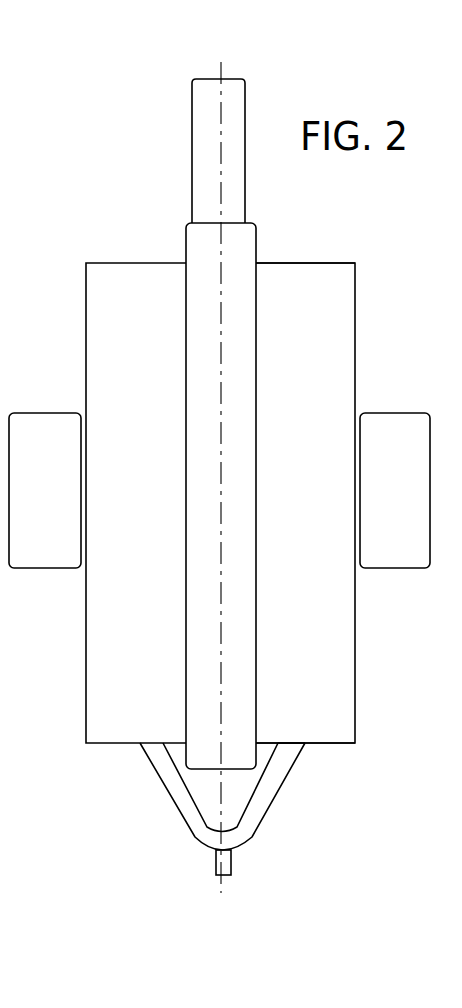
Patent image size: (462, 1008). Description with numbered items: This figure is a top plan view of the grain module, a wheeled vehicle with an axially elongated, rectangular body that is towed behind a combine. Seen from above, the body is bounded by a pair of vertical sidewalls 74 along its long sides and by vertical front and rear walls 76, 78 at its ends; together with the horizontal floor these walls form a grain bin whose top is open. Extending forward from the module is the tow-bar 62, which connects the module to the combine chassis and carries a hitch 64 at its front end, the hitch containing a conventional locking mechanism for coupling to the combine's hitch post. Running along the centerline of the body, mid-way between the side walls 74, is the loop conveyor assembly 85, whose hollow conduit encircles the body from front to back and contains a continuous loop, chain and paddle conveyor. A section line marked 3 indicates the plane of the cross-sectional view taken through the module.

The section line 3- 3 is at (221, 62).
The tow-bar 62 is at (183, 807).
The hitch 64 is at (231, 863).
The sidewalls 74 is at (355, 332).
The front wall 76 is at (267, 745).
The rear wall 78 is at (300, 262).
The loop conveyor assembly 85 is at (199, 320).